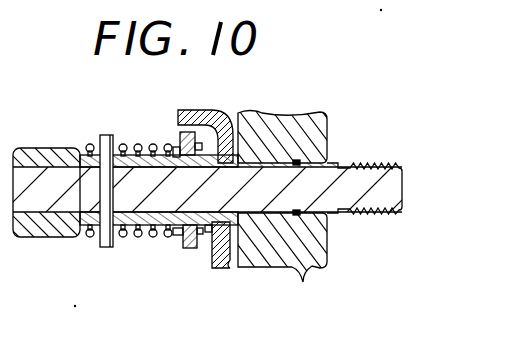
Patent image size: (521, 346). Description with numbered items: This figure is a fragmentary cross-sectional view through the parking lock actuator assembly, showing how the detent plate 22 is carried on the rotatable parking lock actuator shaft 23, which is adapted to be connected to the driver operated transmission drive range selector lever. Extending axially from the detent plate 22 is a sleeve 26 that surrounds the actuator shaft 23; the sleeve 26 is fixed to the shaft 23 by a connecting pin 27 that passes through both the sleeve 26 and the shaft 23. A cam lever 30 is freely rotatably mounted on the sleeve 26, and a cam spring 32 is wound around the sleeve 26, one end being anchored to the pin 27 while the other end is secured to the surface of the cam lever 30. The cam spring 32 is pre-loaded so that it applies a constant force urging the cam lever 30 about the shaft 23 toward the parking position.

The detent plate 22 is at (227, 268).
The parking lock actuator shaft 23 is at (368, 163).
The sleeve 26 is at (155, 237).
The connecting pin 27 is at (111, 134).
The cam lever 30 is at (194, 248).
The cam spring 32 is at (141, 146).